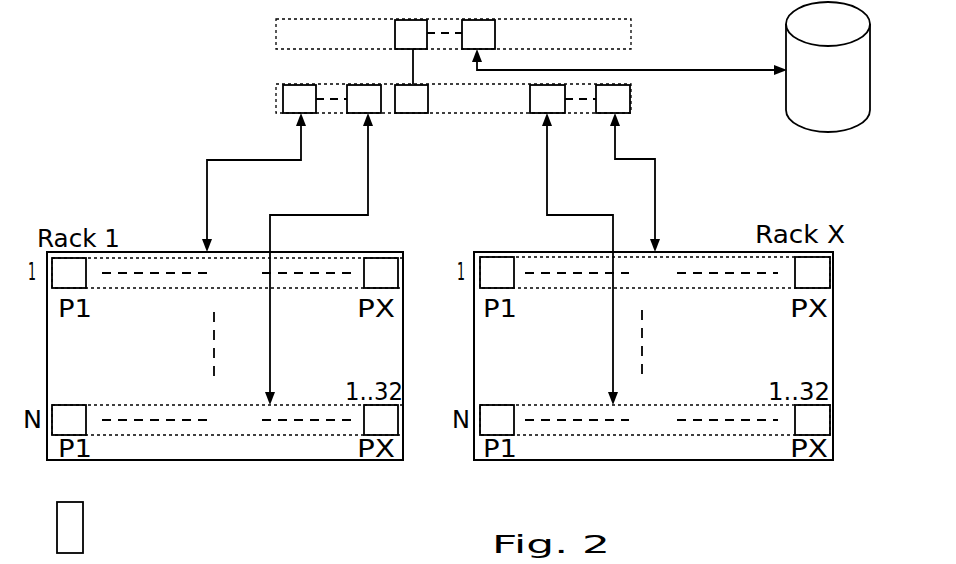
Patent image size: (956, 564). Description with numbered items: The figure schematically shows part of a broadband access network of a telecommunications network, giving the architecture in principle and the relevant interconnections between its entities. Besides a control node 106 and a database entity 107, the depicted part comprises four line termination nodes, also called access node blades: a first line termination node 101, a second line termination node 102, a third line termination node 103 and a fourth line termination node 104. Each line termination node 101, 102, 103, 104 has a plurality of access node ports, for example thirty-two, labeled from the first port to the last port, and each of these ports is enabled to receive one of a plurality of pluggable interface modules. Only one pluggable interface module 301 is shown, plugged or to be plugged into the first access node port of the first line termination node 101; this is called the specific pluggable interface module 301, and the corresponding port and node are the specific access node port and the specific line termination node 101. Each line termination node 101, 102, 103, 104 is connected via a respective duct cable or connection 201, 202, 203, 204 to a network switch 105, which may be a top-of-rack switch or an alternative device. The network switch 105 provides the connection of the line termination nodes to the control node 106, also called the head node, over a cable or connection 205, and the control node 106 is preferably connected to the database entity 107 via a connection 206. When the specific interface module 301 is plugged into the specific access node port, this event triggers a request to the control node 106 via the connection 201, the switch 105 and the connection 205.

The first line termination node 101 is at (227, 420).
The second line termination node 102 is at (227, 273).
The third line termination node 103 is at (655, 273).
The fourth line termination node 104 is at (655, 420).
The network switch 105 is at (453, 99).
The control node 106 is at (453, 34).
The database entity 107 is at (828, 85).
The duct cable 201 is at (231, 182).
The duct cable 202 is at (319, 259).
The duct cable 203 is at (554, 259).
The duct cable 204 is at (628, 182).
The cable or connection 205 is at (383, 66).
The connection 206 is at (629, 56).
The pluggable interface module 301 is at (70, 468).